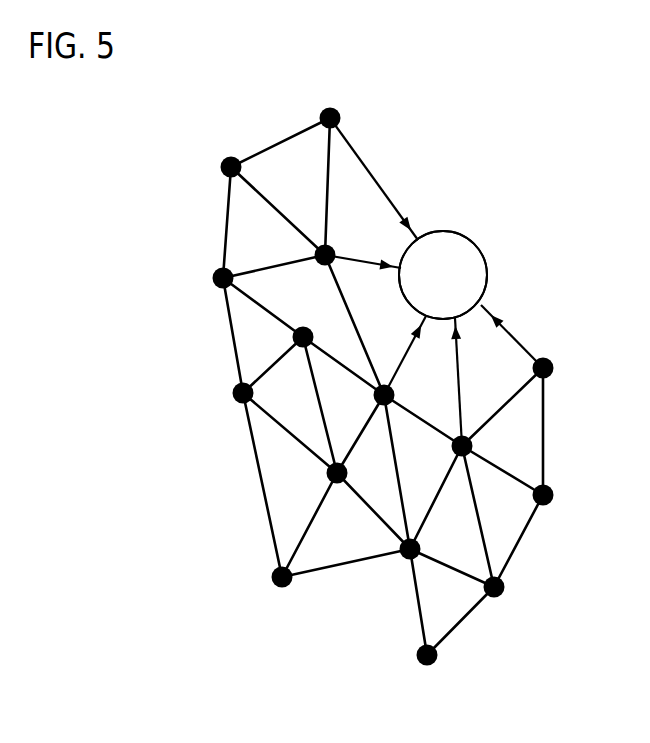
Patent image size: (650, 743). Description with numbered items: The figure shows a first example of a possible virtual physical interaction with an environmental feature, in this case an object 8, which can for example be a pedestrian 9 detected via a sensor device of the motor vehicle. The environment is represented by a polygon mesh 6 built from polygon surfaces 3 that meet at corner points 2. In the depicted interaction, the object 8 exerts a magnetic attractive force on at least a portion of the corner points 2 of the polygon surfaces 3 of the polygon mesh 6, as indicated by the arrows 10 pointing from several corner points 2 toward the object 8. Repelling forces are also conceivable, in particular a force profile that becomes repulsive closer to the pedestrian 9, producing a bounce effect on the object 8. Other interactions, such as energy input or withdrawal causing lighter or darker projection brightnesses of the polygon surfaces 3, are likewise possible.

The corner points 2 is at (323, 117).
The polygon surfaces 3 is at (272, 477).
The polygon mesh 6 is at (340, 392).
The object 8 is at (478, 217).
The pedestrian 9 is at (487, 268).
The arrows 10 is at (370, 162).